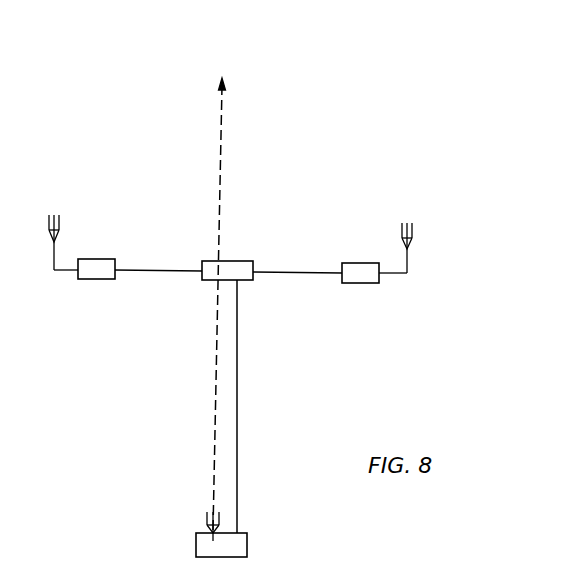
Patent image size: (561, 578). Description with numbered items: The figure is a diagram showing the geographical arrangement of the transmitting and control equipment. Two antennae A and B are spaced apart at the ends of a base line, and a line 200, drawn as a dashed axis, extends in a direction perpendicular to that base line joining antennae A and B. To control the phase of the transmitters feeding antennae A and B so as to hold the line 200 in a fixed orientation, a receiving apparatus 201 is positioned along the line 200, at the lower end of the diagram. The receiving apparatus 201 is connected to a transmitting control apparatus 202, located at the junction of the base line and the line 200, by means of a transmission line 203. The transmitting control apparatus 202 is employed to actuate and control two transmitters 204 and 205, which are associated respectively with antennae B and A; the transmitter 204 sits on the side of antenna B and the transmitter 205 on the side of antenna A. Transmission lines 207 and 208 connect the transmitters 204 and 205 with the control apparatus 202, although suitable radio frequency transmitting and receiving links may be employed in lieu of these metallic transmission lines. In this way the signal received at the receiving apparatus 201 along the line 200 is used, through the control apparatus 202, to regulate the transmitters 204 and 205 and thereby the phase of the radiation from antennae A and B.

The line 200 is at (220, 183).
The receiving apparatus 201 is at (247, 545).
The transmitting control apparatus 202 is at (232, 260).
The transmission line 203 is at (238, 413).
The transmitter 204 is at (93, 281).
The transmitter 205 is at (363, 284).
The transmission line 207 is at (166, 272).
The transmission line 208 is at (315, 275).
The antenna A is at (413, 229).
The antenna B is at (60, 222).